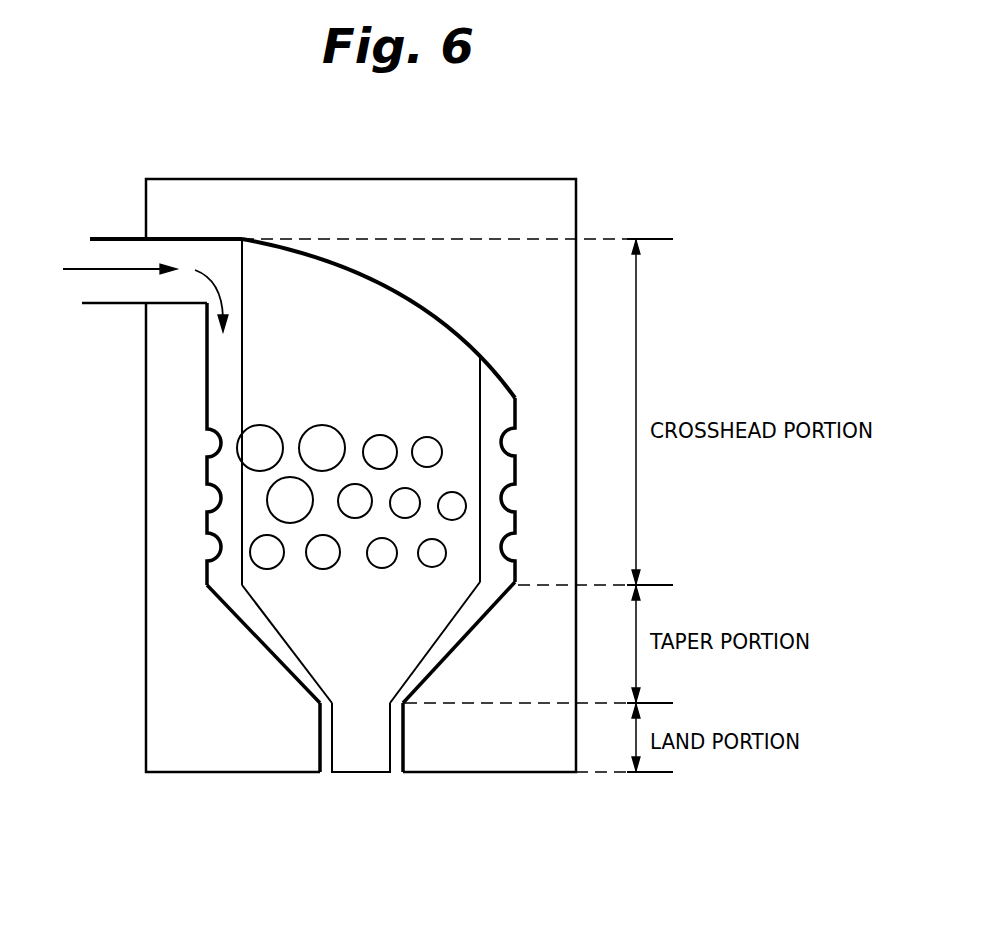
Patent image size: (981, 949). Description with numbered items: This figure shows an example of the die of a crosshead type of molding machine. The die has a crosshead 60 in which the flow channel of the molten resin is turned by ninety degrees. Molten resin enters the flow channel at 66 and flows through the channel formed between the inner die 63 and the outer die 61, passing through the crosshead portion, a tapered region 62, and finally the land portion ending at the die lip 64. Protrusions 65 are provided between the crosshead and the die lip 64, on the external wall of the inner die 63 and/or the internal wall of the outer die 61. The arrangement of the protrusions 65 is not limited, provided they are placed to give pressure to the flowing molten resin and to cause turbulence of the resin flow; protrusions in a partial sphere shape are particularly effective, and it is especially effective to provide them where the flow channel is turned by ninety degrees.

The crosshead 60 is at (538, 341).
The outer die 61 is at (215, 705).
The taper portion channel 62 is at (300, 655).
The inner die 63 is at (369, 604).
The die lip 64 is at (357, 758).
The protrusions 65 is at (377, 452).
The molten resin entry 66 is at (139, 285).